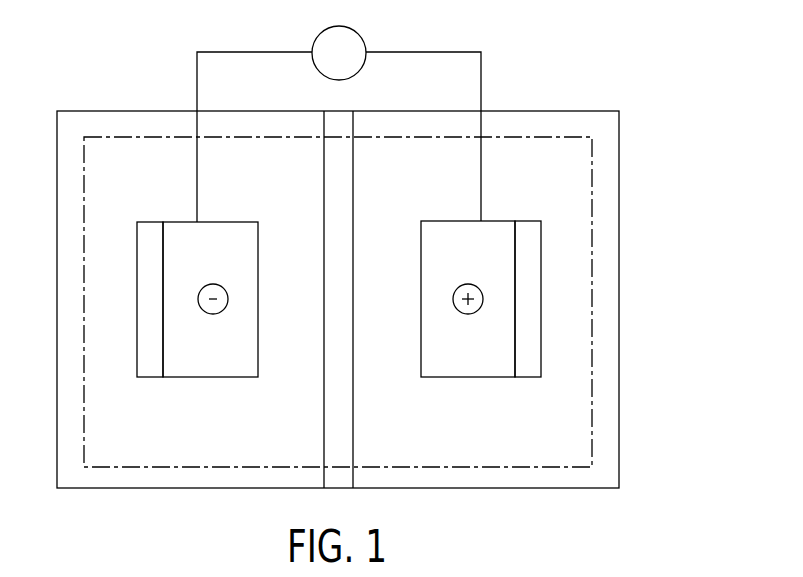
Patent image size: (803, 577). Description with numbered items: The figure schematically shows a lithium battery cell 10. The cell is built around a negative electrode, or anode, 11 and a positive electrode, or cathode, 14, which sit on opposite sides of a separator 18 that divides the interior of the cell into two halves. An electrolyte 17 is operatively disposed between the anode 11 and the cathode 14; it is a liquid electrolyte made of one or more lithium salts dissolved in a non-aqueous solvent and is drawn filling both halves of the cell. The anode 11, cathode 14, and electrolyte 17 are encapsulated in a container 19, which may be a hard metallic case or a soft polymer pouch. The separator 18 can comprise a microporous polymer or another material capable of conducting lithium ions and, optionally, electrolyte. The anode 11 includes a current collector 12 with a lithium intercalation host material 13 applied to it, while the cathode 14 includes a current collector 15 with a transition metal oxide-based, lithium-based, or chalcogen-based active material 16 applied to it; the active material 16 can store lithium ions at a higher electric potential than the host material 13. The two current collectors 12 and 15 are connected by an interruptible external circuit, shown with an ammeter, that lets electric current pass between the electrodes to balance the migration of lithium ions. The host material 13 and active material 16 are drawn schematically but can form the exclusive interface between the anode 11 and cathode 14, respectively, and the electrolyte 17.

The lithium battery cell 10 is at (373, 247).
The negative electrode 11 is at (174, 337).
The current collector 12 is at (220, 368).
The lithium intercalation host material 13 is at (152, 302).
The positive electrode 14 is at (503, 338).
The current collector 15 is at (460, 368).
The active material 16 is at (527, 306).
The electrolyte 17 is at (282, 417).
The separator 18 is at (342, 188).
The container 19 is at (620, 313).